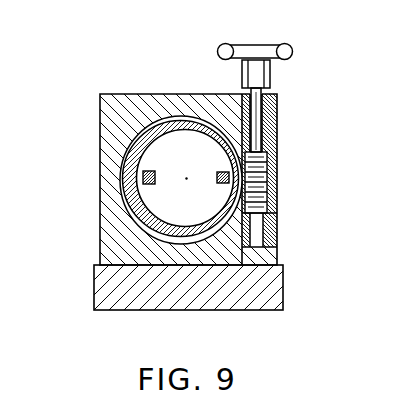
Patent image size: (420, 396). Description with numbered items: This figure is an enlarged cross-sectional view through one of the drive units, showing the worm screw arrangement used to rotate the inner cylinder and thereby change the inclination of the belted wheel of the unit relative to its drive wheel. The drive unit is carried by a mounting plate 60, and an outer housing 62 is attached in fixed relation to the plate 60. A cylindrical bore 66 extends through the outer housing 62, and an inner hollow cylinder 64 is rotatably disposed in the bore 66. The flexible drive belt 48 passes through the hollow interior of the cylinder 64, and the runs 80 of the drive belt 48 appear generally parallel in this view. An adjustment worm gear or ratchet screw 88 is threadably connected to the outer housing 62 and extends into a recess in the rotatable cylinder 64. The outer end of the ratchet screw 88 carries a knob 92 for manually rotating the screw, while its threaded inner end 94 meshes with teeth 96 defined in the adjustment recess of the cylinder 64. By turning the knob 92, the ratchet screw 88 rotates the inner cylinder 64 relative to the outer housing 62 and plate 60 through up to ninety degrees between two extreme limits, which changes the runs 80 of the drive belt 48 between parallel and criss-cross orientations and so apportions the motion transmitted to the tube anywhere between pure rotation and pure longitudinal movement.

The drive belt 48 is at (213, 165).
The mounting plate 60 is at (283, 283).
The outer housing 62 is at (100, 238).
The inner hollow cylinder 64 is at (145, 139).
The cylindrical bore 66 is at (124, 195).
The runs of the drive belt 80 is at (151, 187).
The adjustment worm gear or ratchet screw 88 is at (256, 123).
The knob 92 is at (220, 45).
The threaded inner end 94 is at (268, 206).
The teeth 96 is at (241, 214).